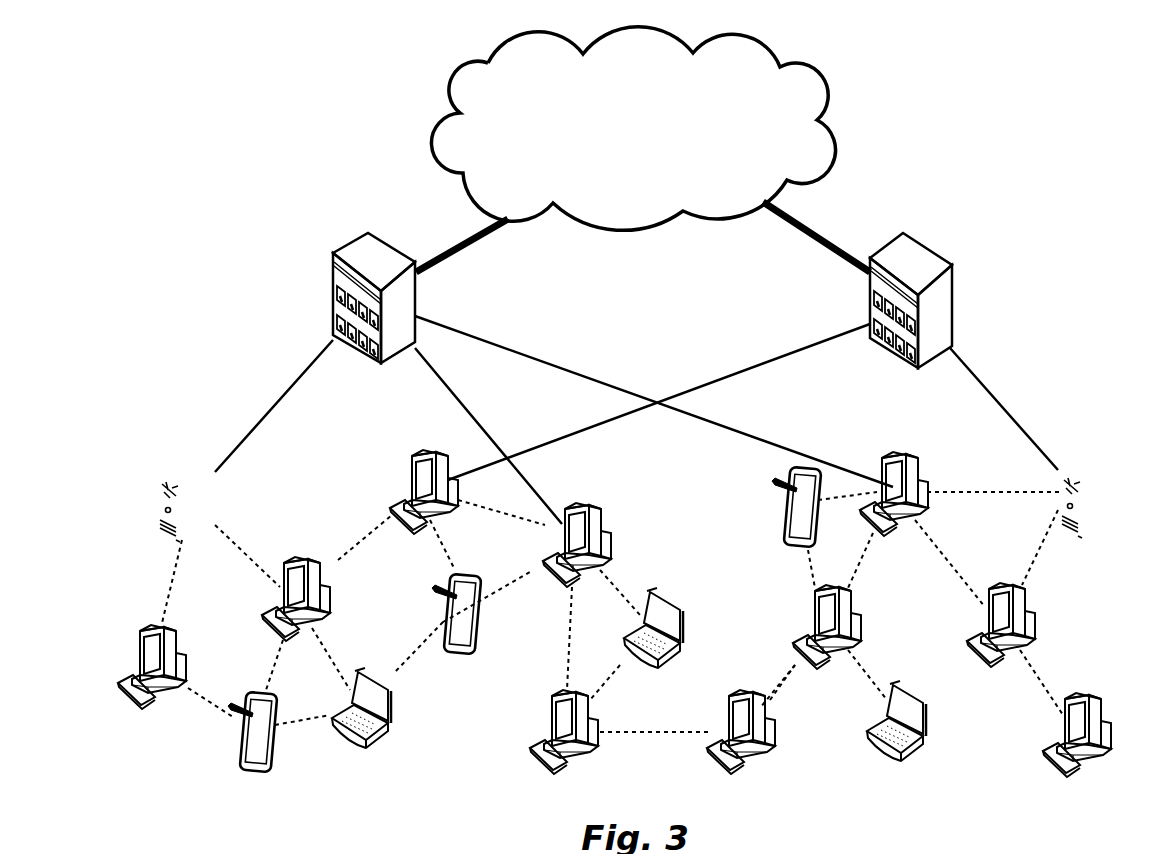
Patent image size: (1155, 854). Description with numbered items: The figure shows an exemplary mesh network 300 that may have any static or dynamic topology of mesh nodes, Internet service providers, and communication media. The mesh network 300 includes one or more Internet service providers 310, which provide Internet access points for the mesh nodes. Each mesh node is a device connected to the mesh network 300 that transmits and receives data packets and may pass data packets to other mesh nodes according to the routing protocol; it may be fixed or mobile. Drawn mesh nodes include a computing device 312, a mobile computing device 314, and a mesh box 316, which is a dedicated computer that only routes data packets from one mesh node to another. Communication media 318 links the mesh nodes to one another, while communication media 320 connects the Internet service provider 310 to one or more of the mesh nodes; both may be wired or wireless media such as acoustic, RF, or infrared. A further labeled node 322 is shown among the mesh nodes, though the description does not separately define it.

The mesh network 300 is at (614, 407).
The Internet service provider 310 is at (851, 364).
The computing device 312 is at (855, 747).
The mobile computing device 314 is at (238, 777).
The mesh box 316 is at (155, 445).
The communication media 318 is at (334, 559).
The communication media 320 is at (733, 364).
The personal computer 322 is at (185, 636).